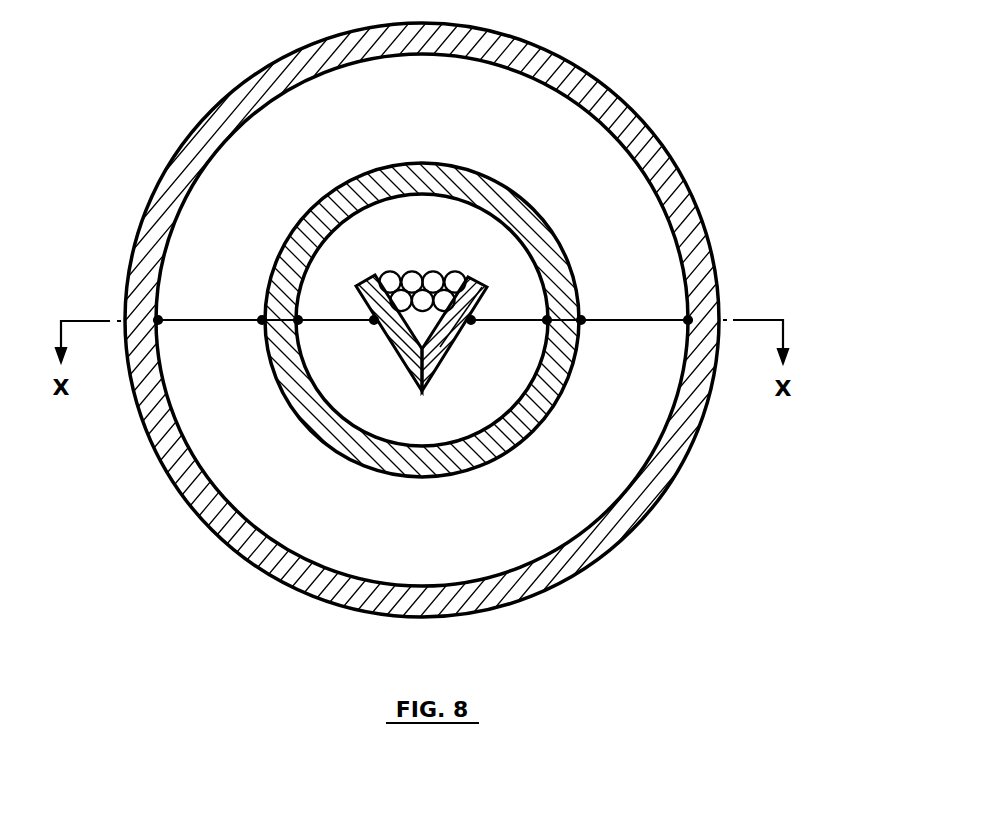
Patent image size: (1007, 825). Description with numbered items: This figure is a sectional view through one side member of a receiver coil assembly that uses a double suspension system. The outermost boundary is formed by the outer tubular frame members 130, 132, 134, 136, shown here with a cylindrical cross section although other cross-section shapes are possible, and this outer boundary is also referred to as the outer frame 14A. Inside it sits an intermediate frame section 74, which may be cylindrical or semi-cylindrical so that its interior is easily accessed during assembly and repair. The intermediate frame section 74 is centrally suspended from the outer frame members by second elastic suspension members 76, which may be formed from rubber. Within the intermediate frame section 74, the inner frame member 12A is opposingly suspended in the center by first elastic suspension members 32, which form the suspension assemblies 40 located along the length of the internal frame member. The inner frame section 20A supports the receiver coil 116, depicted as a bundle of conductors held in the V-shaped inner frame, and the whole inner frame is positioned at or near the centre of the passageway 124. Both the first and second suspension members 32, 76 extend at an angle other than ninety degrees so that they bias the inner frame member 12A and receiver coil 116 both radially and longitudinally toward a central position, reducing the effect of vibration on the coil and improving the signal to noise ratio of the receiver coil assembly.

The outer tubular frame member 130 is at (479, 320).
The outer tubular frame member 132 is at (422, 320).
The outer tubular frame member 134 is at (422, 320).
The outer tubular frame member 136 is at (636, 138).
The outer frame 14A is at (703, 420).
The intermediate frame section 74 is at (557, 255).
The second elastic suspension member 76 is at (197, 320).
The suspension assembly 40 is at (332, 298).
The first elastic suspension member 32 is at (328, 320).
The receiver coil 116 is at (418, 276).
The inner frame member 12A is at (437, 350).
The inner frame section 20A is at (407, 350).
The passageway 124 is at (403, 546).